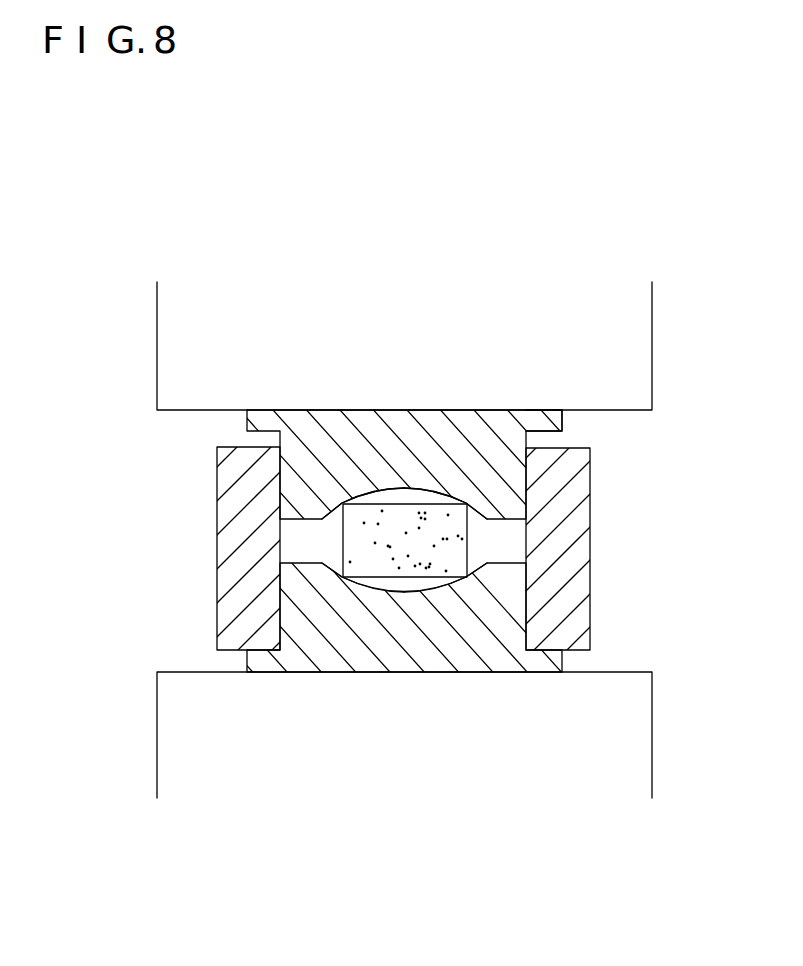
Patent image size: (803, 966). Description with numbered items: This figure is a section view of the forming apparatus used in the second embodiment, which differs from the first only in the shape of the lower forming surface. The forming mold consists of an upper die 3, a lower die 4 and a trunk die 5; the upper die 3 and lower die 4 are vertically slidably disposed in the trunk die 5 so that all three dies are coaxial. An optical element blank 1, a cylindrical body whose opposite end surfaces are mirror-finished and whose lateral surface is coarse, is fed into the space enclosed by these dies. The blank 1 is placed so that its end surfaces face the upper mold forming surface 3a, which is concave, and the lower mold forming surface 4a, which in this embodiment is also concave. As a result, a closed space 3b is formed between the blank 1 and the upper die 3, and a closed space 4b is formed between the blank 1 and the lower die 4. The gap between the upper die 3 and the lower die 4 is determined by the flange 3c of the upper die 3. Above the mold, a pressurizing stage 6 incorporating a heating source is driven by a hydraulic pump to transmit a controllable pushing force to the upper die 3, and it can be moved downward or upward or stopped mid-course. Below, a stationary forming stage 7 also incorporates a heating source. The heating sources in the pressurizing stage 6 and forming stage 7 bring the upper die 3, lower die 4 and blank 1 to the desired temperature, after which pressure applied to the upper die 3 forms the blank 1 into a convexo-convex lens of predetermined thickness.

The optical element blank 1 is at (452, 517).
The upper die 3 is at (408, 435).
The upper mold forming surface 3a is at (438, 487).
The closed space 3b is at (393, 494).
The flange 3c is at (562, 418).
The lower die 4 is at (407, 663).
The lower mold forming surface 4a is at (440, 592).
The closed space 4b is at (385, 583).
The trunk die 5 is at (560, 575).
The pressurizing stage 6 is at (173, 350).
The forming stage 7 is at (177, 738).